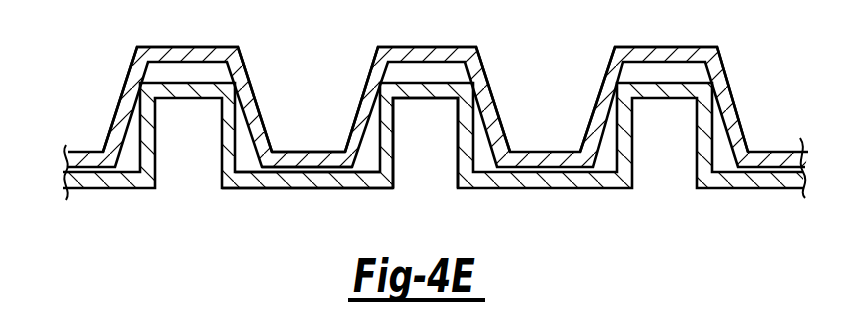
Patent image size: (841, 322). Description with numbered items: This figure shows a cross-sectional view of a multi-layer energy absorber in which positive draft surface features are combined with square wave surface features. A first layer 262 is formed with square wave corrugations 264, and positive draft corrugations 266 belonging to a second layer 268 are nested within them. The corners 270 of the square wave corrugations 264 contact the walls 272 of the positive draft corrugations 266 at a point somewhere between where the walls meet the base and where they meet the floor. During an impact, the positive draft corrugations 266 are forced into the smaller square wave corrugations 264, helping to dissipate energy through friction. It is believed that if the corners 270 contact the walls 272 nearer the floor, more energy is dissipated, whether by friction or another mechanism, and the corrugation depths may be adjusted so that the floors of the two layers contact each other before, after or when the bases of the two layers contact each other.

The first layer 262 is at (117, 192).
The square wave corrugations 264 is at (273, 190).
The positive draft corrugations 266 is at (315, 150).
The second layer 268 is at (82, 150).
The corners 270 is at (458, 98).
The walls 272 is at (258, 98).